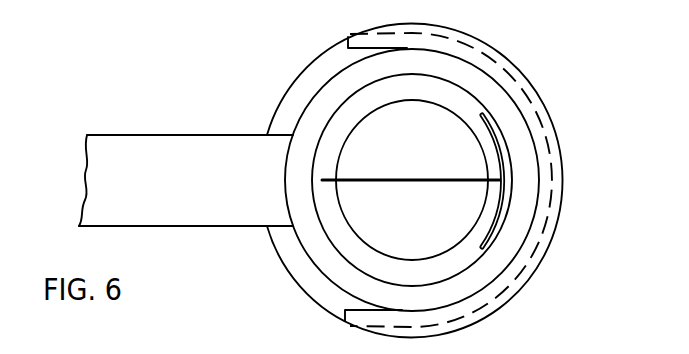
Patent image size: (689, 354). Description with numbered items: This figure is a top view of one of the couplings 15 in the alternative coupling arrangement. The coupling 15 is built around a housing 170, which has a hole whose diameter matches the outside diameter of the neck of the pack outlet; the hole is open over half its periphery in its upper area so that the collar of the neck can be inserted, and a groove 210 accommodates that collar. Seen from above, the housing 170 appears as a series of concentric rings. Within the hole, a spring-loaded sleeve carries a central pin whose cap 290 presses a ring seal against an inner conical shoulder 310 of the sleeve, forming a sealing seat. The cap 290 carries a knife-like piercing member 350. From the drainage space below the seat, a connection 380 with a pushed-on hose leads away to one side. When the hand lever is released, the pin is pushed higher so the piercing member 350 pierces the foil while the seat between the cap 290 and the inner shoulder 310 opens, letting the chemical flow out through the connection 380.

The coupling 15 is at (297, 293).
The housing 170 is at (530, 88).
The groove 210 is at (535, 125).
The cap 290 is at (380, 232).
The inner conical shoulder 310 is at (308, 237).
The piercing member 350 is at (476, 186).
The connection 380 is at (193, 148).